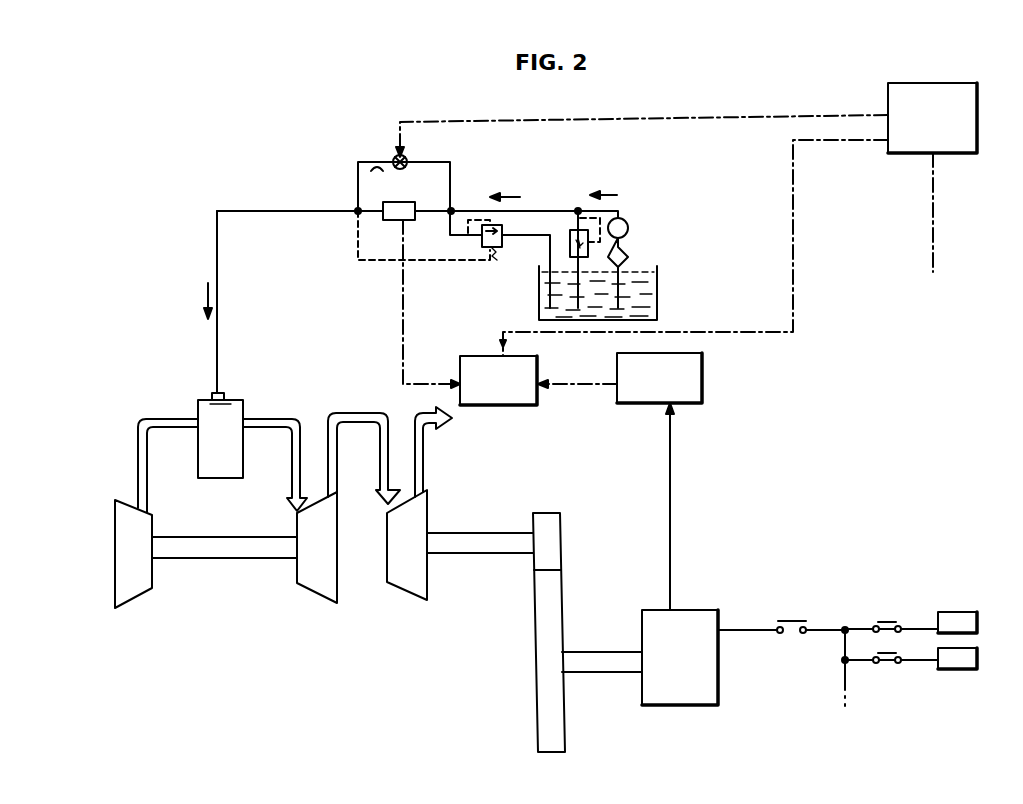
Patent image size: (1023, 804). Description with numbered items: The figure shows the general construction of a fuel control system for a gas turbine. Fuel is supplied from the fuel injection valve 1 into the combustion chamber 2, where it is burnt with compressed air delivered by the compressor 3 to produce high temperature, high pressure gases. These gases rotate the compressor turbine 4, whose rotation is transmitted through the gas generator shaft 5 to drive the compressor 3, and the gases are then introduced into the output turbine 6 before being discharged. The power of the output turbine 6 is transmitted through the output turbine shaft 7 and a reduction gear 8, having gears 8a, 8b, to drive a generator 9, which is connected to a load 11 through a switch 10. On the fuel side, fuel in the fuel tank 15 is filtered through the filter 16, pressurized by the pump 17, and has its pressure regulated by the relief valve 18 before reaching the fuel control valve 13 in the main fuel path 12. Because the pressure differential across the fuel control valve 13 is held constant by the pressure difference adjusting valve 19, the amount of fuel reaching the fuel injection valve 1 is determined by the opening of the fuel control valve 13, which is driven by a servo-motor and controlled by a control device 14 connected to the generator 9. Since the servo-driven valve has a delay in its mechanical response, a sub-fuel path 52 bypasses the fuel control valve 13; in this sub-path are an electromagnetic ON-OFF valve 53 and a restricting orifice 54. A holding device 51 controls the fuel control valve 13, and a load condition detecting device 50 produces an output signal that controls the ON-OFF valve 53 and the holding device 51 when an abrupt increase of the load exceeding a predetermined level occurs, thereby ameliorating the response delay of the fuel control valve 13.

The fuel injection valve 1 is at (223, 413).
The combustion chamber 2 is at (235, 422).
The compressor 3 is at (140, 599).
The compressor turbine 4 is at (319, 597).
The gas generator shaft 5 is at (228, 559).
The output turbine 6 is at (410, 597).
The output turbine shaft 7 is at (490, 556).
The reduction gear 8 is at (587, 632).
The gear 8a is at (561, 529).
The gear 8b is at (564, 625).
The generator 9 is at (695, 611).
The switch 10 is at (792, 621).
The load 11 is at (979, 622).
The main fuel path 12 is at (262, 212).
The fuel control valve 13 is at (406, 202).
The control device 14 is at (702, 386).
The fuel tank 15 is at (657, 288).
The filter 16 is at (629, 255).
The pump 17 is at (627, 221).
The relief valve 18 is at (573, 230).
The pressure difference adjusting valve 19 is at (504, 249).
The load condition detecting device 50 is at (931, 83).
The holding device 51 is at (508, 405).
The sub-fuel path 52 is at (452, 180).
The ON-OFF valve 53 is at (407, 158).
The restricting orifice 54 is at (377, 159).